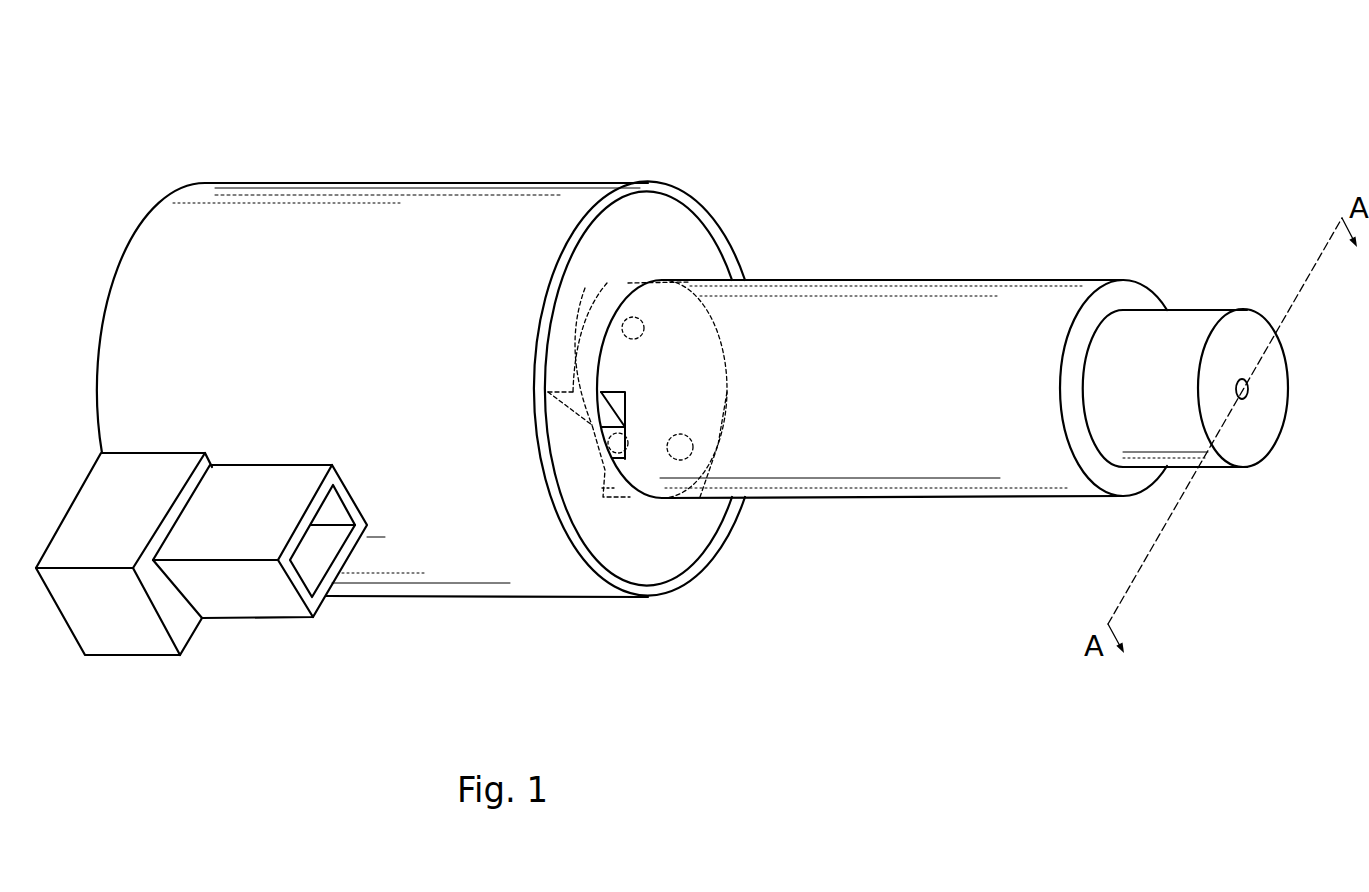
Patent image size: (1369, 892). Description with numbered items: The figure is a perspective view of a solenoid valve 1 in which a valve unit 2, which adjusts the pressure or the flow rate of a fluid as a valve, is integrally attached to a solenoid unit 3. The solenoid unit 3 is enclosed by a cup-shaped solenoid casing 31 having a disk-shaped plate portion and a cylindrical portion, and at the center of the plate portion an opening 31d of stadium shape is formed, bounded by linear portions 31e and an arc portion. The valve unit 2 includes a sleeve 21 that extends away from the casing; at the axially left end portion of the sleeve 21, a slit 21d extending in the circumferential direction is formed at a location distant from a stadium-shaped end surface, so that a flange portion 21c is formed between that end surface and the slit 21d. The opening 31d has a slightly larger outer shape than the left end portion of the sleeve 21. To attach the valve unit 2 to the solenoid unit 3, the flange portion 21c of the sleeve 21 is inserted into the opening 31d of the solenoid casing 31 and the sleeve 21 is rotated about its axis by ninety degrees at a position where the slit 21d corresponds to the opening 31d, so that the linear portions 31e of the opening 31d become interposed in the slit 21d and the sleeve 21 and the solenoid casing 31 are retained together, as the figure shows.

The solenoid valve 1 is at (884, 588).
The valve unit 2 is at (800, 536).
The solenoid unit 3 is at (380, 148).
The sleeve 21 is at (1053, 303).
The flange portion 21c is at (562, 322).
The slit 21d is at (628, 283).
The solenoid casing 31 is at (303, 228).
The opening 31d is at (625, 458).
The linear portions 31e is at (613, 330).